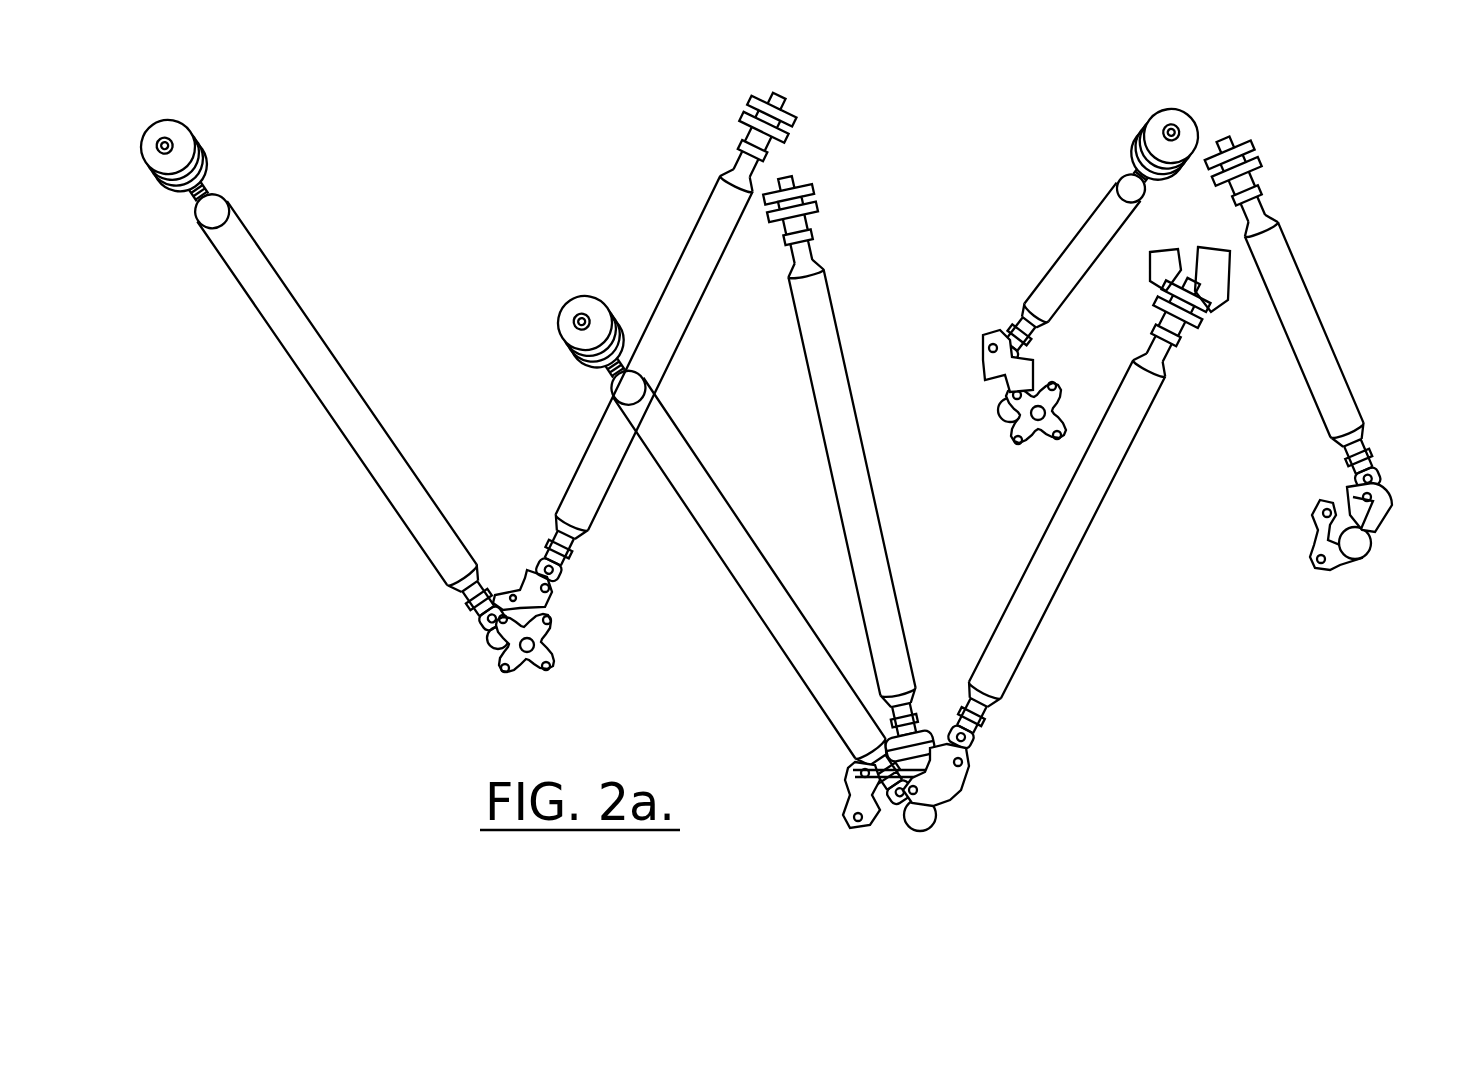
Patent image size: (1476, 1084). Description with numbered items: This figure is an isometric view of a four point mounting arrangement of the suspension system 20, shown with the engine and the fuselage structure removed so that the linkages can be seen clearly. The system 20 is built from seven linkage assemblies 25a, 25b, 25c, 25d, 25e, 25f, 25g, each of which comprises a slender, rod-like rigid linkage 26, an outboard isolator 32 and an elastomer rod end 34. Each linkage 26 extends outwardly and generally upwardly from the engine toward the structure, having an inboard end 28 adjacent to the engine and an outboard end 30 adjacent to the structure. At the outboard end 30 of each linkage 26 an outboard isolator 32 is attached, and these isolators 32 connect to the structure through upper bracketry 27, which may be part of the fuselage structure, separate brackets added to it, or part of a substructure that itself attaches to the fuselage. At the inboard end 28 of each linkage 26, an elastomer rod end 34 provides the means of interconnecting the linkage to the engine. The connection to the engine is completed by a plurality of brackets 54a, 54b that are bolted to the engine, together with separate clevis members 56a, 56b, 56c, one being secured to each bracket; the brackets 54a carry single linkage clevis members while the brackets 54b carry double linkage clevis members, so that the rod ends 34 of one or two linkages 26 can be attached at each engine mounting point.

The suspension system 20 is at (801, 464).
The linkage assembly 25a is at (370, 473).
The linkage assembly 25b is at (688, 240).
The linkage assembly 25c is at (735, 572).
The linkage assembly 25d is at (845, 363).
The linkage assembly 25e is at (1058, 610).
The linkage assembly 25f is at (1077, 213).
The linkage assembly 25g is at (1302, 270).
The rigid linkage 26 is at (342, 372).
The upper bracketry 27 is at (1157, 272).
The inboard end 28 is at (442, 588).
The outboard end 30 is at (232, 212).
The outboard isolator 32 is at (202, 126).
The elastomer rod end 34 is at (478, 634).
The single linkage bracket 54a is at (517, 673).
The double linkage bracket 54b is at (852, 815).
The clevis member 56a is at (995, 368).
The clevis member 56b is at (552, 585).
The clevis member 56c is at (940, 787).